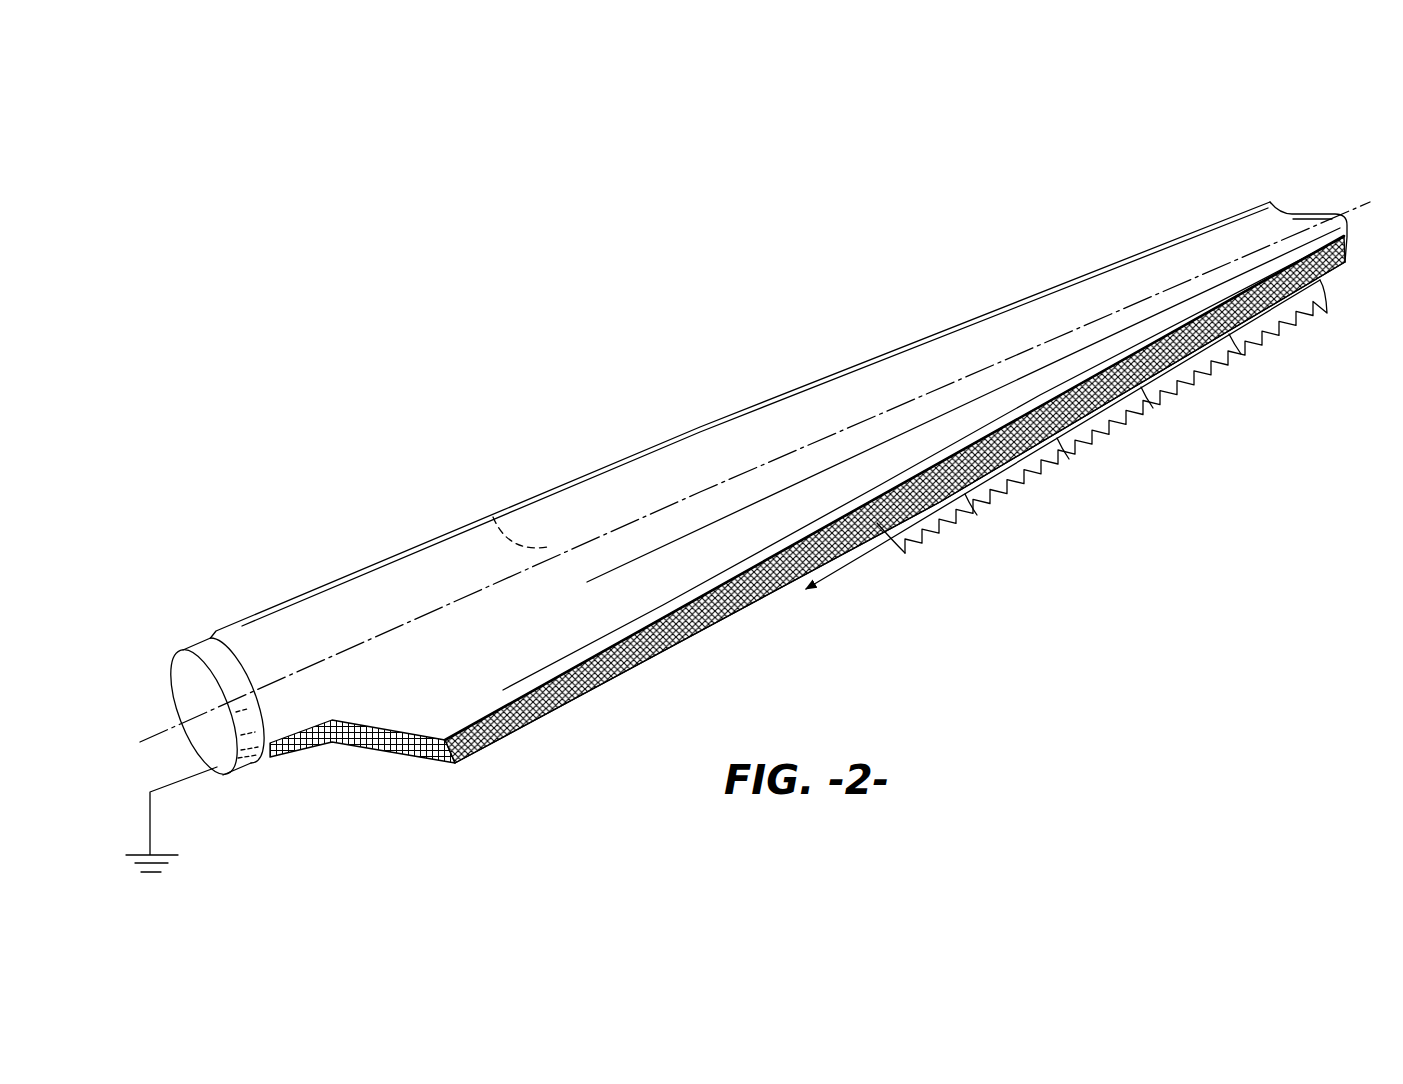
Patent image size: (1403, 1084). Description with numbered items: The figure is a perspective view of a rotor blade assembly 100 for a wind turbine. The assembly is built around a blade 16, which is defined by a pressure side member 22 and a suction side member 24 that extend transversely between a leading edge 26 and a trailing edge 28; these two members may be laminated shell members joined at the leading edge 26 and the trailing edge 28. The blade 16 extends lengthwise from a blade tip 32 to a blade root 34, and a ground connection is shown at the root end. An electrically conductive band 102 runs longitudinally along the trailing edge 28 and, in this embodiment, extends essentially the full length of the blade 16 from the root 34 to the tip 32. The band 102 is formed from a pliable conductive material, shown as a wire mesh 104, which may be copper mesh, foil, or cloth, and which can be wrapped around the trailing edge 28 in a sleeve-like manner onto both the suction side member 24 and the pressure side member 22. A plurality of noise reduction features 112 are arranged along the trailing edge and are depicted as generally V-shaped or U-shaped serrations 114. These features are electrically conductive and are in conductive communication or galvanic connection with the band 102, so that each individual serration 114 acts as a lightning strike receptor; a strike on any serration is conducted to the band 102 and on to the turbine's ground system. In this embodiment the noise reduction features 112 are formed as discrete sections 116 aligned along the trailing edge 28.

The rotor blade assembly 100 is at (1210, 124).
The blade 16 is at (801, 418).
The pressure side member 22 is at (493, 517).
The suction side member 24 is at (575, 518).
The leading edge 26 is at (417, 543).
The trailing edge 28 is at (543, 713).
The blade tip 32 is at (1334, 210).
The blade root 34 is at (197, 612).
The electrically conductive band 102 is at (988, 428).
The wire mesh 104 is at (753, 590).
The noise reduction features 112 is at (918, 553).
The serrations 114 is at (1298, 311).
The discrete sections 116 is at (1315, 306).